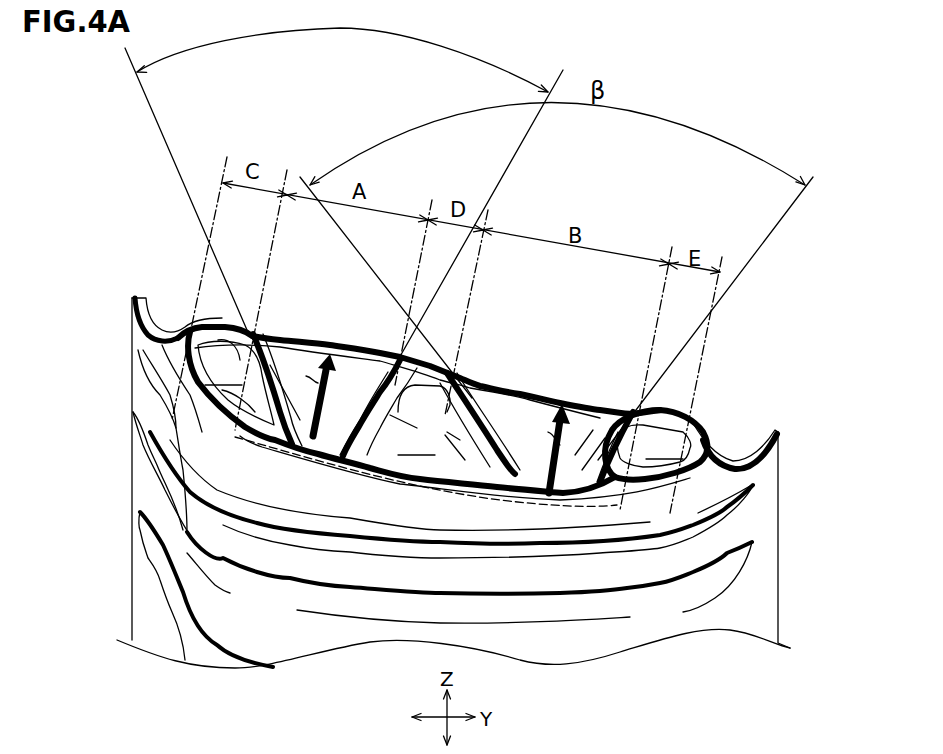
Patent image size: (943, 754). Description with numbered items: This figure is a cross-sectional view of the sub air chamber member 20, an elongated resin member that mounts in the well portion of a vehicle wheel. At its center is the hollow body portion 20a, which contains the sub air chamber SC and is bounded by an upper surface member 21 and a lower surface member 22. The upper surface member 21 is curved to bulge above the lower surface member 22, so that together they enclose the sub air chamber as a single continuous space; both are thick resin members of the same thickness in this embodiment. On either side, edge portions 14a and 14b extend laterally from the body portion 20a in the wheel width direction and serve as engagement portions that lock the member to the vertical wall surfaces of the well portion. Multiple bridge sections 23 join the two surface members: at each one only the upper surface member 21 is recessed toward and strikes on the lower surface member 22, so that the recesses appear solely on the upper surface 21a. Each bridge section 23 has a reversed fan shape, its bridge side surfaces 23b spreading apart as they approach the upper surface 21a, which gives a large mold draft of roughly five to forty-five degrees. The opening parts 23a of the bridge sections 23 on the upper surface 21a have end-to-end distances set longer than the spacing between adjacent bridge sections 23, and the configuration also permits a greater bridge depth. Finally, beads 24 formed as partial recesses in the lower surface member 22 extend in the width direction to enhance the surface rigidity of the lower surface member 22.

The edge portion 14a is at (757, 440).
The edge portion 14b is at (150, 318).
The sub air chamber member 20 is at (399, 363).
The body portion 20a is at (318, 344).
The upper surface member 21 is at (388, 312).
The upper surface 21a is at (233, 330).
The lower surface member 22 is at (200, 432).
The bridge section 23 is at (443, 378).
The opening part 23a is at (395, 356).
The bridge side surface 23b is at (355, 385).
The bead 24 is at (223, 525).